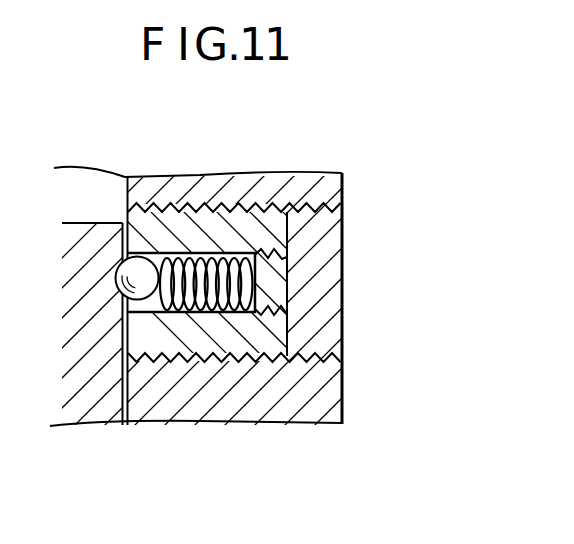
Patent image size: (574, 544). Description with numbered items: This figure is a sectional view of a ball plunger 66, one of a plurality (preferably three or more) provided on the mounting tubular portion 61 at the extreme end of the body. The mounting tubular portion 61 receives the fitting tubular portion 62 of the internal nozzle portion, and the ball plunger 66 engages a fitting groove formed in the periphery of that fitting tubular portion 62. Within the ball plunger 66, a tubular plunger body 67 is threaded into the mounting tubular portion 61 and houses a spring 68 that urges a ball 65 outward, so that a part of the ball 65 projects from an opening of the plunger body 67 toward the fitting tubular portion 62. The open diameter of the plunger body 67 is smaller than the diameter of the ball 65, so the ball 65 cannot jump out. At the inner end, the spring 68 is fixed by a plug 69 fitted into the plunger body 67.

The mounting tubular portion 61 is at (323, 188).
The fitting tubular portion 62 is at (89, 240).
The ball 65 is at (141, 270).
The ball plunger 66 is at (287, 272).
The plunger body 67 is at (252, 338).
The spring 68 is at (209, 312).
The plug 69 is at (315, 312).